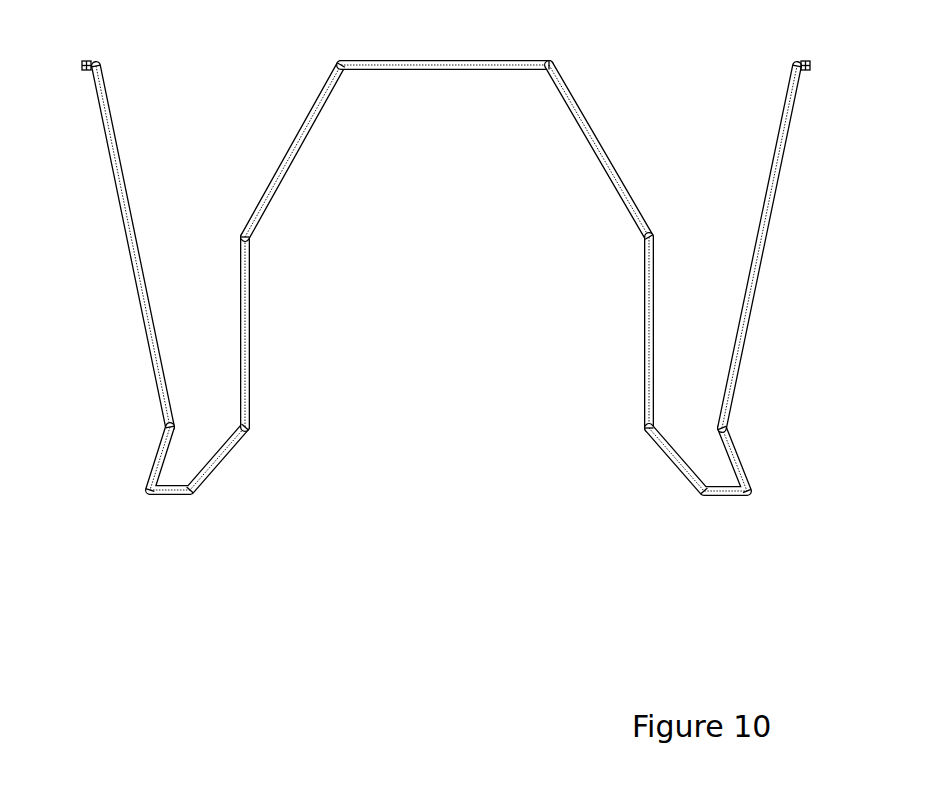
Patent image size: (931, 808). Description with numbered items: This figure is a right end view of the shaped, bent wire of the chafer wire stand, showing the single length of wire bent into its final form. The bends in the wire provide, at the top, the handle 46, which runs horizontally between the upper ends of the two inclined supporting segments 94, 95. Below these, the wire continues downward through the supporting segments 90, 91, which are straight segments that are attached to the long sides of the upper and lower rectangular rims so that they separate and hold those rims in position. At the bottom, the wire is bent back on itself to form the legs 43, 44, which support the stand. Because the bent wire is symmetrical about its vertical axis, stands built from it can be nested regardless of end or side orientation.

The supporting segment 90 is at (115, 182).
The supporting segment 91 is at (768, 202).
The supporting segment 94 is at (305, 130).
The supporting segment 95 is at (592, 148).
The handle 46 is at (458, 60).
The leg 43 is at (175, 492).
The leg 44 is at (737, 495).